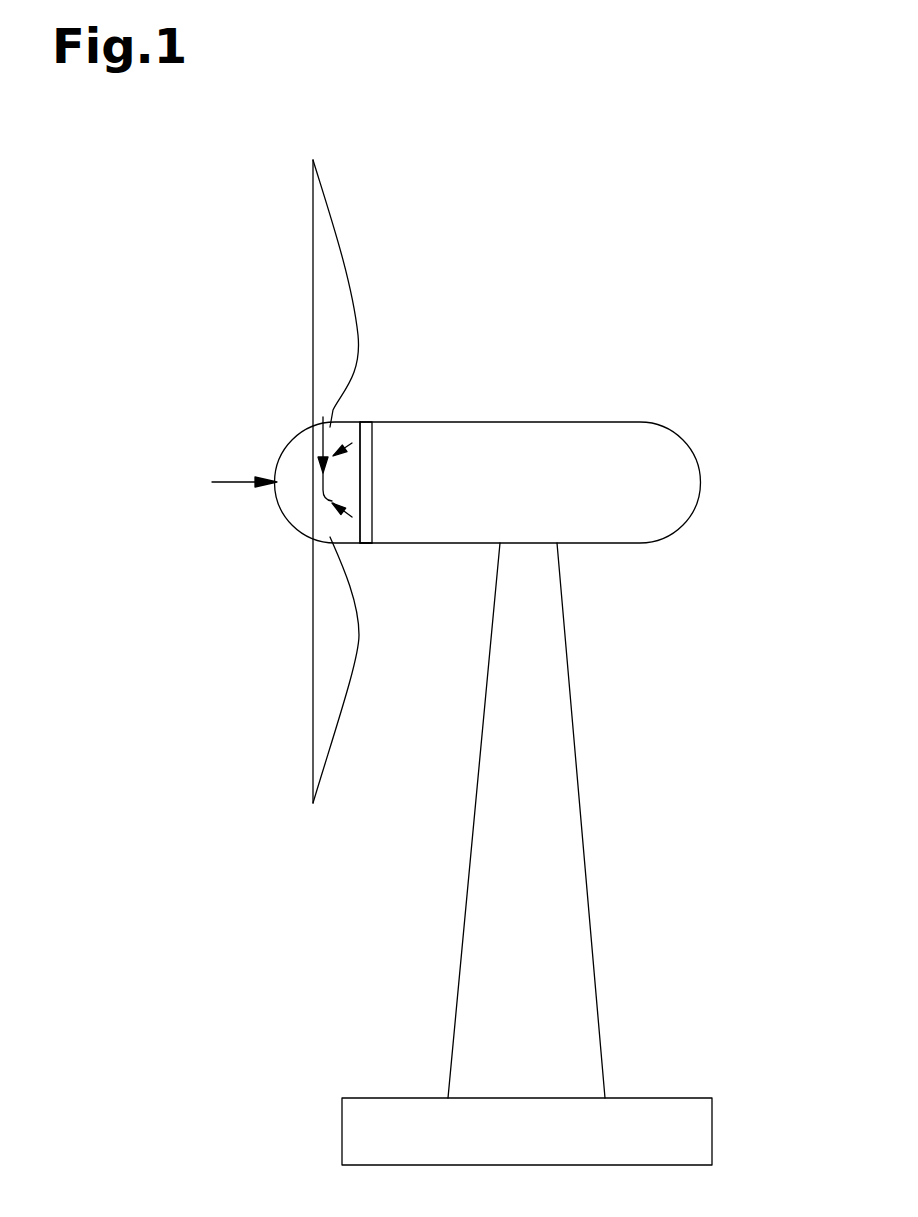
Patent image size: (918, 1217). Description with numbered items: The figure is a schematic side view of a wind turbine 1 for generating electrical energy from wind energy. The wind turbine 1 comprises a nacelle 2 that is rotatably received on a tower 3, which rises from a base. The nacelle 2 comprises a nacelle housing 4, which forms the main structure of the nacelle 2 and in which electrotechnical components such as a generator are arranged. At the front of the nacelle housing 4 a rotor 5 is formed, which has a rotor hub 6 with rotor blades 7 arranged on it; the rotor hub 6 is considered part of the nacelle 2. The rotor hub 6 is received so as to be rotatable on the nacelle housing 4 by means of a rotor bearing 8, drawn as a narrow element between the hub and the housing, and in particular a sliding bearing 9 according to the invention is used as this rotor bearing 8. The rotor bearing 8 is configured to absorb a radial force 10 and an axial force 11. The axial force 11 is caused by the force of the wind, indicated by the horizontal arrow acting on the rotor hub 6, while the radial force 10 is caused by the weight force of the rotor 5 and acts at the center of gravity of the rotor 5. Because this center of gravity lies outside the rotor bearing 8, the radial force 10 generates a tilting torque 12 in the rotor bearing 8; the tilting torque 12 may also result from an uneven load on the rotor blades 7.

The wind turbine 1 is at (617, 198).
The nacelle 2 is at (600, 337).
The tower 3 is at (553, 775).
The nacelle housing 4 is at (597, 442).
The rotor 5 is at (275, 443).
The rotor hub 6 is at (311, 526).
The rotor blades 7 is at (337, 308).
The rotor bearing 8 is at (373, 420).
The sliding bearing 9 is at (371, 562).
The radial force 10 is at (316, 440).
The axial force 11 is at (240, 480).
The tilting torque 12 is at (328, 501).